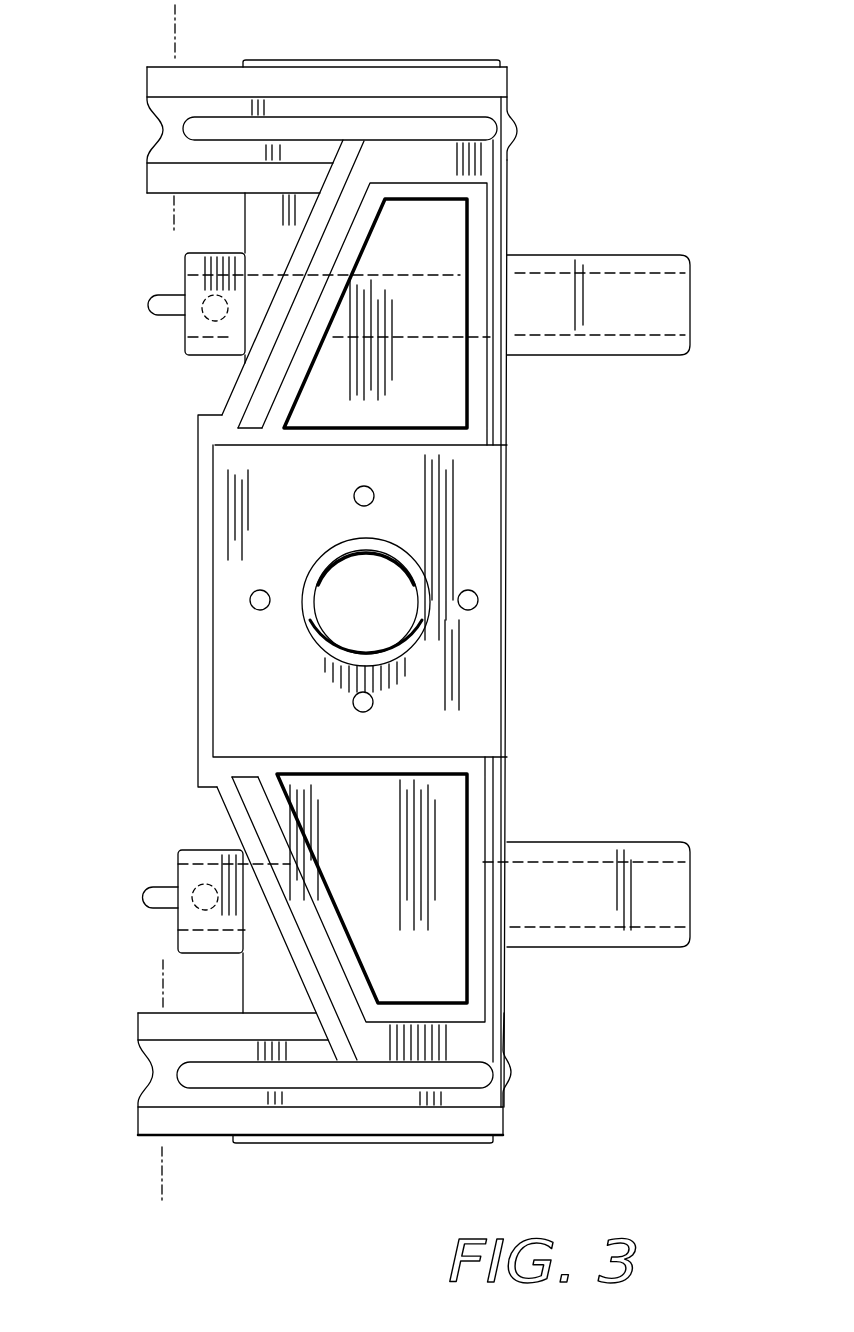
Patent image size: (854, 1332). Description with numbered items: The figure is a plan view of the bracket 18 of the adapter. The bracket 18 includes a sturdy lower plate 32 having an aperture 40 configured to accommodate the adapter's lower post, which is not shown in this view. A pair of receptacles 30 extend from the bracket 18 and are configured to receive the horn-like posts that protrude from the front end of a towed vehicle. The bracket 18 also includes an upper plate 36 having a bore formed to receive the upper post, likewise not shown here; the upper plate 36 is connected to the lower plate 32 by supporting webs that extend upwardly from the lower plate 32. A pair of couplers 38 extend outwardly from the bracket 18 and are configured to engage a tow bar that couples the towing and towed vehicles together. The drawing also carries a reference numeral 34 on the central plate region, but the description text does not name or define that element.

The bracket 18 is at (140, 1147).
The receptacles 30 is at (630, 297).
The sturdy plate 32 is at (437, 230).
The central mounting plate 34 is at (487, 463).
The upper plate 36 is at (390, 553).
The couplers 38 is at (157, 80).
The aperture 40 is at (337, 585).